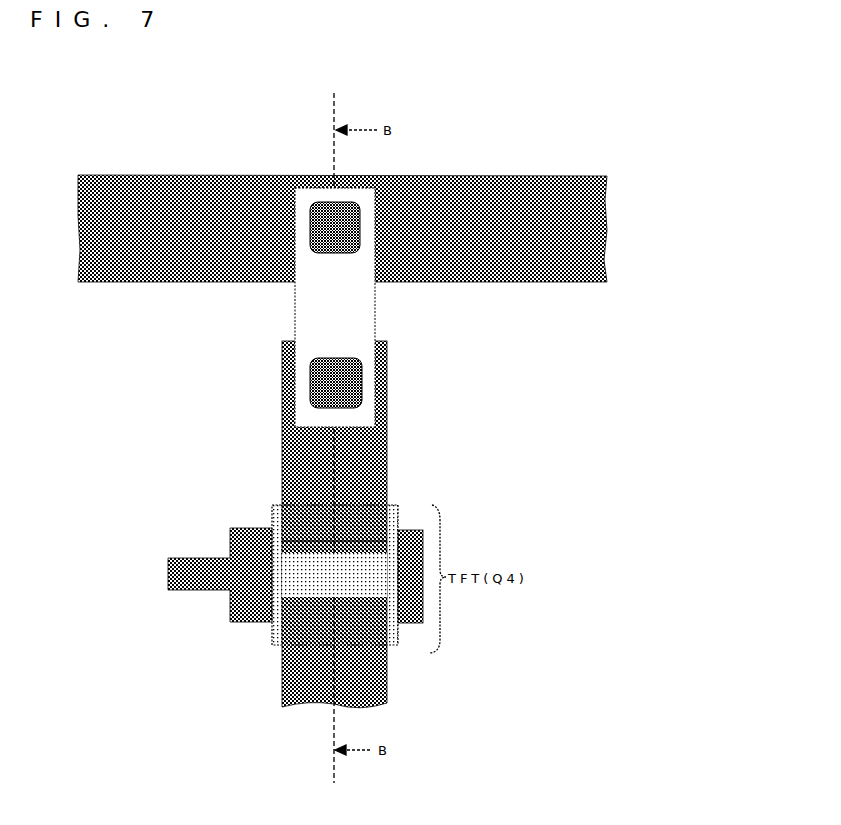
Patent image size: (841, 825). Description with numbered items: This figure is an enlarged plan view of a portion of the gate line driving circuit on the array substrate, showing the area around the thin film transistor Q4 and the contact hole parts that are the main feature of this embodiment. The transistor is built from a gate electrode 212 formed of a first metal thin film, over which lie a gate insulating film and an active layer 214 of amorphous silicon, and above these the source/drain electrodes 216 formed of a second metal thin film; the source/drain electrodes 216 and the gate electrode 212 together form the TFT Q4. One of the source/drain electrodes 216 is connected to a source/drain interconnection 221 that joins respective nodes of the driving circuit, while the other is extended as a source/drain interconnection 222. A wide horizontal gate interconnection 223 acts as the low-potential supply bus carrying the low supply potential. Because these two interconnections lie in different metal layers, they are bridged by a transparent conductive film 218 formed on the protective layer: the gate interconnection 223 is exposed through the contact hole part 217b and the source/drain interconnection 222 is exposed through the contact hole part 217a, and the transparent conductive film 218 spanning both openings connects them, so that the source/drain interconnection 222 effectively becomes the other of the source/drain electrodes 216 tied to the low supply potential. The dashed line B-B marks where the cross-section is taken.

The gate electrode 212 is at (195, 589).
The active layer 214 is at (465, 611).
The source/drain electrodes 216 is at (334, 580).
The contact hole part 217a is at (206, 409).
The contact hole part 217b is at (405, 164).
The transparent conductive film 218 is at (430, 307).
The source/drain interconnection 221 is at (253, 651).
The source/drain interconnection 222 is at (249, 441).
The gate interconnection 223 is at (366, 256).